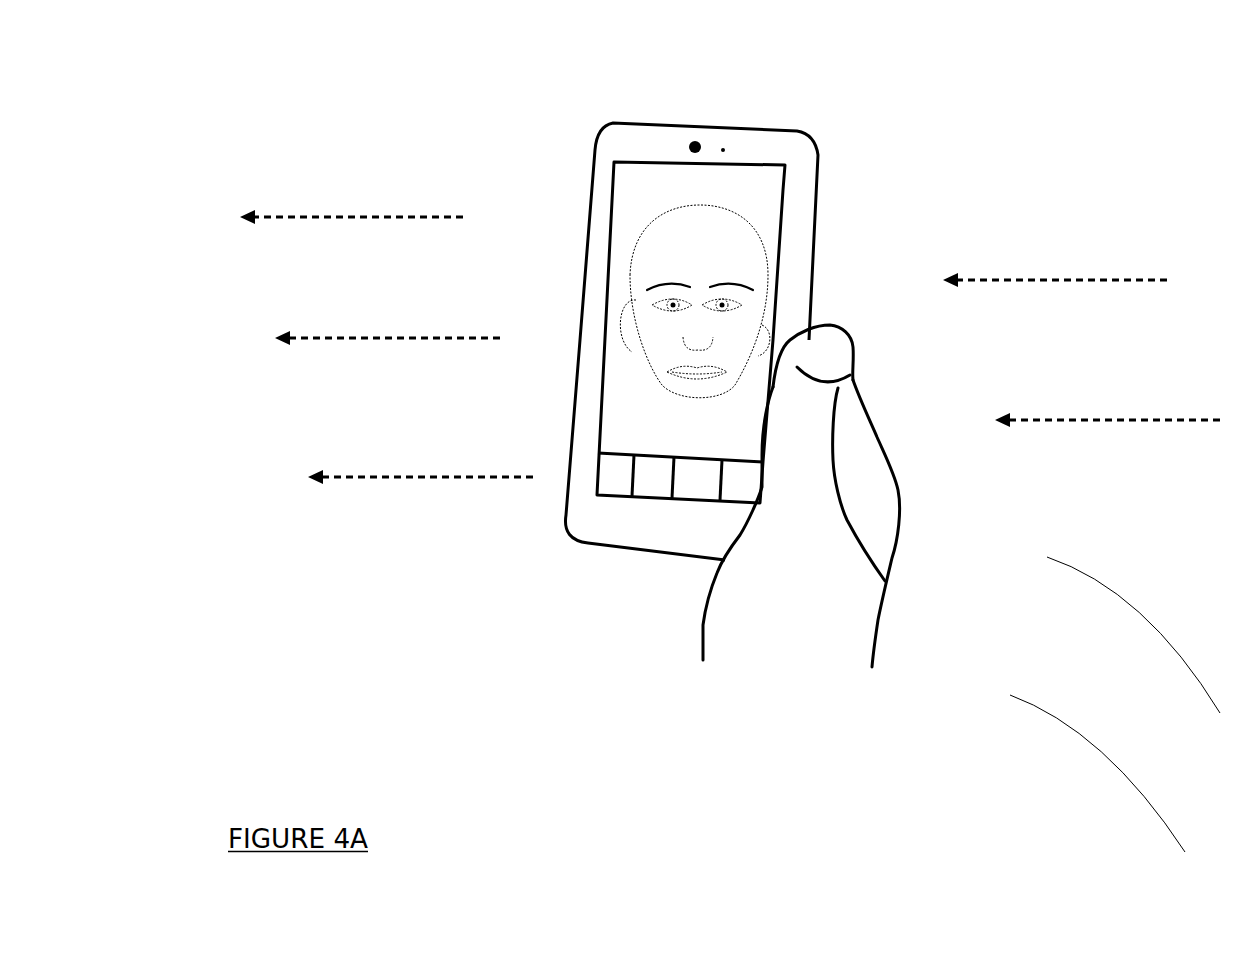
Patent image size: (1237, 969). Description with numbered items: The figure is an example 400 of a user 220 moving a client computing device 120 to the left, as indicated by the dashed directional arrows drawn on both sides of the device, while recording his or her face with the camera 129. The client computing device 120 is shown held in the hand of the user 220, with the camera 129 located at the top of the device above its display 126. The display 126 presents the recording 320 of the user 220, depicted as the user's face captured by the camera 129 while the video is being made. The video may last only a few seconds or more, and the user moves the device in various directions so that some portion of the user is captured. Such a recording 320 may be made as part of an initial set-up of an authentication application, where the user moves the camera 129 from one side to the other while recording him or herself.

The example 400 is at (317, 778).
The client computing device 120 is at (592, 146).
The camera 129 is at (712, 142).
The display 126 is at (778, 292).
The recording 320 is at (758, 252).
The user 220 is at (698, 653).